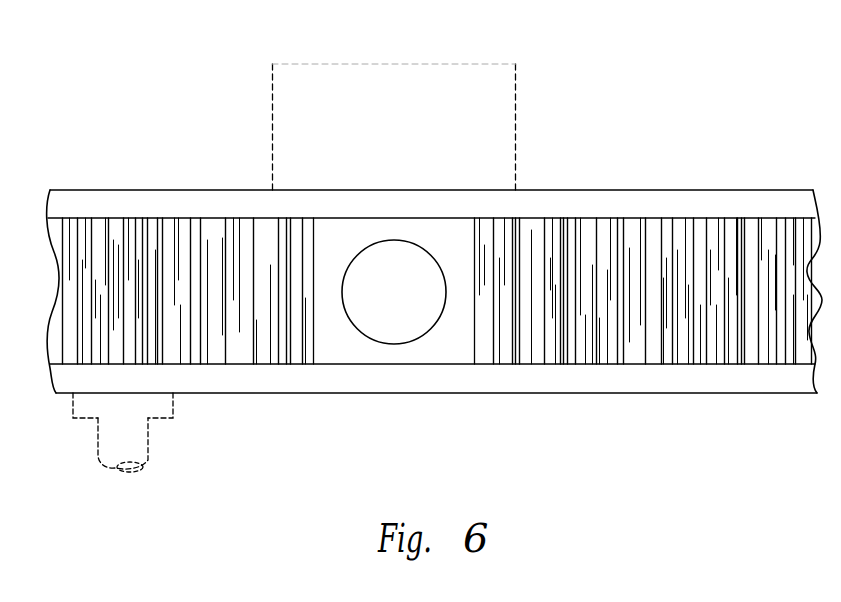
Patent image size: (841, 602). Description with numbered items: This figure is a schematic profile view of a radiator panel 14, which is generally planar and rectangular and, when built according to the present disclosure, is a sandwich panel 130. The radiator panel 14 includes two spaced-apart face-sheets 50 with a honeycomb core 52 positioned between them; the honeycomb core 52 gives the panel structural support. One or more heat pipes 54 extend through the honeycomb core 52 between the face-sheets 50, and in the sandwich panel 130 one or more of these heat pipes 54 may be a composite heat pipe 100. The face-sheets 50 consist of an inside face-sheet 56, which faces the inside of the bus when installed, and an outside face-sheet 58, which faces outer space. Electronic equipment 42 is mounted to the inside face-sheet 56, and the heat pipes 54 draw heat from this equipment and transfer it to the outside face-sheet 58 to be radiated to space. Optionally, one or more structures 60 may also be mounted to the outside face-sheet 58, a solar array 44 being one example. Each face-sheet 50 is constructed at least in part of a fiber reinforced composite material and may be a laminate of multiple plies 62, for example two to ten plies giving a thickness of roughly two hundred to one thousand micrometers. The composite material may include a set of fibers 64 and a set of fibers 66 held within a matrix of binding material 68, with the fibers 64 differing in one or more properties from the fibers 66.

The radiator panel 14 is at (712, 85).
The sandwich panel 130 is at (640, 75).
The electronic equipment 42 is at (501, 62).
The solar array 44 is at (148, 452).
The face-sheet 50 is at (660, 190).
The honeycomb core 52 is at (560, 340).
The heat pipe 54 is at (475, 337).
The inside face-sheet 56 is at (583, 190).
The outside face-sheet 58 is at (608, 395).
The structure 60 is at (95, 446).
The ply 62 is at (800, 207).
The set of fibers 64 is at (92, 207).
The set of fibers 66 is at (147, 205).
The binding material 68 is at (205, 208).
The composite heat pipe 100 is at (440, 372).